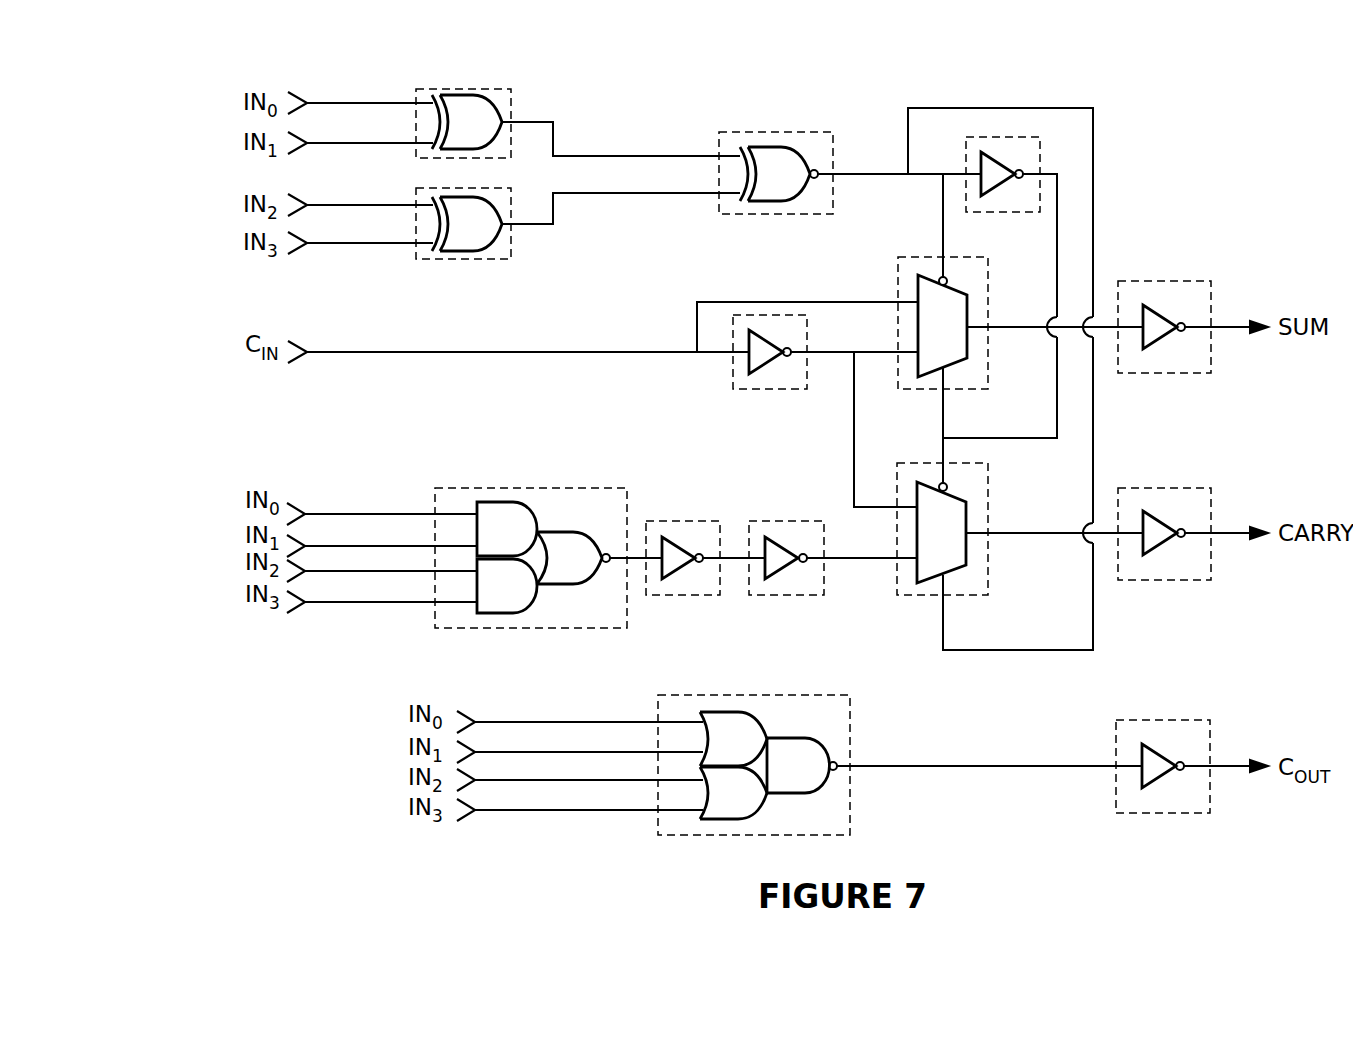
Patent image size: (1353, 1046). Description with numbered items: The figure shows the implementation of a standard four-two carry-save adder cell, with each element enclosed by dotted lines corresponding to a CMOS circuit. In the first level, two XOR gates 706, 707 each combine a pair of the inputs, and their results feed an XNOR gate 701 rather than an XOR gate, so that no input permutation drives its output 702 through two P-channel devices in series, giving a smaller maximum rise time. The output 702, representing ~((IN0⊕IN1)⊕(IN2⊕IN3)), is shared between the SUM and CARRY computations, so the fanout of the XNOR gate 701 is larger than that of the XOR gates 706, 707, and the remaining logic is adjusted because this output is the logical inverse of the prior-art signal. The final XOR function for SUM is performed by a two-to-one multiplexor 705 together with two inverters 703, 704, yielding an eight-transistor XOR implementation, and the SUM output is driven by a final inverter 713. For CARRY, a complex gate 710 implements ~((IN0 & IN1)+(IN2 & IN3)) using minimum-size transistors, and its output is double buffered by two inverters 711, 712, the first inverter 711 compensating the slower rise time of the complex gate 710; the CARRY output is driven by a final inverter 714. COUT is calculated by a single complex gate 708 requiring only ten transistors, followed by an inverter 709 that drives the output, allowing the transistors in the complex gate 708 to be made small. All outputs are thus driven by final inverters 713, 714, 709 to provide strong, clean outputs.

The XNOR gate 701 is at (773, 147).
The output 702 is at (847, 172).
The inverter 703 is at (992, 197).
The inverter 704 is at (762, 372).
The 2-to-1 multiplexor 705 is at (948, 370).
The XOR gate 706 is at (486, 96).
The XOR gate 707 is at (473, 250).
The complex gate 708 is at (762, 693).
The inverter 709 is at (1155, 747).
The complex gate 710 is at (558, 487).
The inverter 711 is at (680, 548).
The inverter 712 is at (778, 548).
The inverter 713 is at (1172, 280).
The inverter 714 is at (1168, 487).